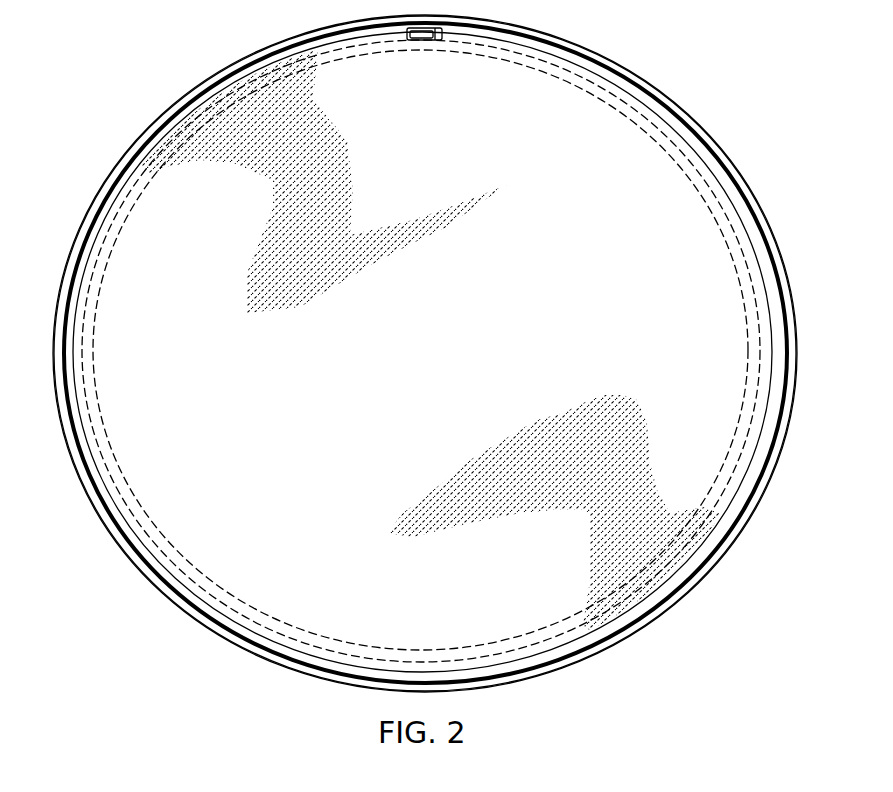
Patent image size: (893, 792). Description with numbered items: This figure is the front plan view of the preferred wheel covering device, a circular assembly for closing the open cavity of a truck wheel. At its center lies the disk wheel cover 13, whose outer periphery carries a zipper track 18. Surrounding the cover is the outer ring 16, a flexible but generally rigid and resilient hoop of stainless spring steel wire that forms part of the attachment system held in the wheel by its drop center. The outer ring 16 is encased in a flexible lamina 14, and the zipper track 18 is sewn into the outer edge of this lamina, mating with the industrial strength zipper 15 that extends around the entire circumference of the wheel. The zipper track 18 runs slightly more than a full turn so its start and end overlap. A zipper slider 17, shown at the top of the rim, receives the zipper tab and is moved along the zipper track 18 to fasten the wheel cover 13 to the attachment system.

The disk wheel cover 13 is at (732, 109).
The flexible lamina 14 is at (155, 217).
The zipper 15 is at (322, 33).
The outer ring 16 is at (80, 228).
The zipper slider 17 is at (442, 40).
The zipper track 18 is at (163, 142).